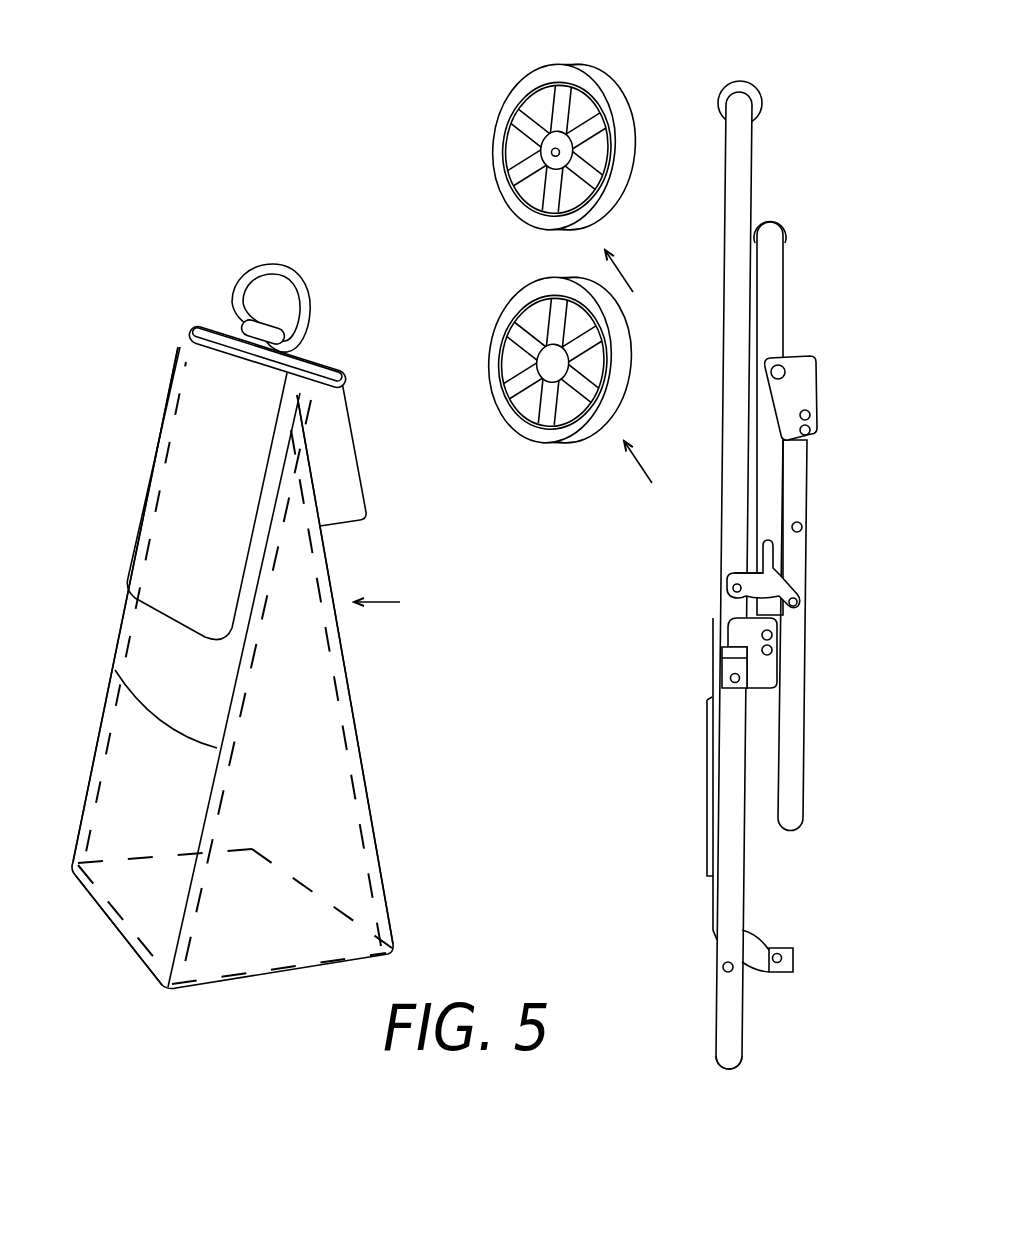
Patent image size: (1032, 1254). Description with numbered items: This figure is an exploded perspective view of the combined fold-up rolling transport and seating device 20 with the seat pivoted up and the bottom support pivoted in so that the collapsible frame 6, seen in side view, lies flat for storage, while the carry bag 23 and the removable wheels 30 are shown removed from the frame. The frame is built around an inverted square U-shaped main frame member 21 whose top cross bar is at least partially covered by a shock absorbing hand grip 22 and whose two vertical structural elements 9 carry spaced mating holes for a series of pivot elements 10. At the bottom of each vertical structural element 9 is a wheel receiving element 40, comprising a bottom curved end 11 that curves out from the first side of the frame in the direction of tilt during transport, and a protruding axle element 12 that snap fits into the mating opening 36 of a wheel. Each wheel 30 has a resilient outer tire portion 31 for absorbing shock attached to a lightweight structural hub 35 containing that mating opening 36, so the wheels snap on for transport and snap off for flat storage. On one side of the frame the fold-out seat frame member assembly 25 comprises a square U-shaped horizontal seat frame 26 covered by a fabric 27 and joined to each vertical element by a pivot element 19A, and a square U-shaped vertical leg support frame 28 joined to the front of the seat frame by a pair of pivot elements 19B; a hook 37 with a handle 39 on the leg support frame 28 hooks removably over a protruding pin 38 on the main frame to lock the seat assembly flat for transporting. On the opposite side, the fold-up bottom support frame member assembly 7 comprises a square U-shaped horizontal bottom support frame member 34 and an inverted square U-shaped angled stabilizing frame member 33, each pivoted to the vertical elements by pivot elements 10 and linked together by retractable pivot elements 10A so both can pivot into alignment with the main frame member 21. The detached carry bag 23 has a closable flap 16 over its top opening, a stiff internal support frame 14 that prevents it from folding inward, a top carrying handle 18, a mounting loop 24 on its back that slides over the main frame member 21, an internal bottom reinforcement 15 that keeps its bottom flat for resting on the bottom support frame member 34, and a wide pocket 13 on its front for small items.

The combined fold-up rolling transport and seating device 20 is at (357, 103).
The wide pocket 13 is at (162, 712).
The stiff internal support frame 14 is at (352, 763).
The internal bottom reinforcement 15 is at (117, 905).
The closable flap 16 is at (153, 483).
The top carrying handle 18 is at (262, 265).
The carry bag 23 is at (100, 688).
The mounting loop 24 is at (318, 358).
The removable wheels 30 is at (534, 263).
The resilient outer tire portion 31 is at (542, 263).
The structural hub 35 is at (567, 137).
The mating opening 36 is at (550, 133).
The collapsible frame 6 is at (745, 545).
The fold-up bottom support frame member assembly 7 is at (736, 822).
The vertical structural elements 9 is at (736, 580).
The pivot elements 10 is at (731, 678).
The retractable pivot elements 10A is at (725, 972).
The bottom curved end 11 is at (760, 943).
The protruding axle element 12 is at (780, 950).
The pivot element 19A is at (729, 633).
The pivot elements 19B is at (810, 388).
The main frame member 21 is at (723, 287).
The shock absorbing hand grip 22 is at (752, 85).
The fold-out seat frame member assembly 25 is at (815, 377).
The horizontal seat frame 26 is at (783, 303).
The fabric 27 is at (766, 222).
The vertical leg support frame 28 is at (805, 700).
The stabilizing frame member 33 is at (742, 1000).
The bottom support frame member 34 is at (707, 800).
The hook 37 is at (705, 556).
The protruding pin 38 is at (733, 588).
The handle 39 is at (755, 559).
The wheel receiving element 40 is at (809, 951).